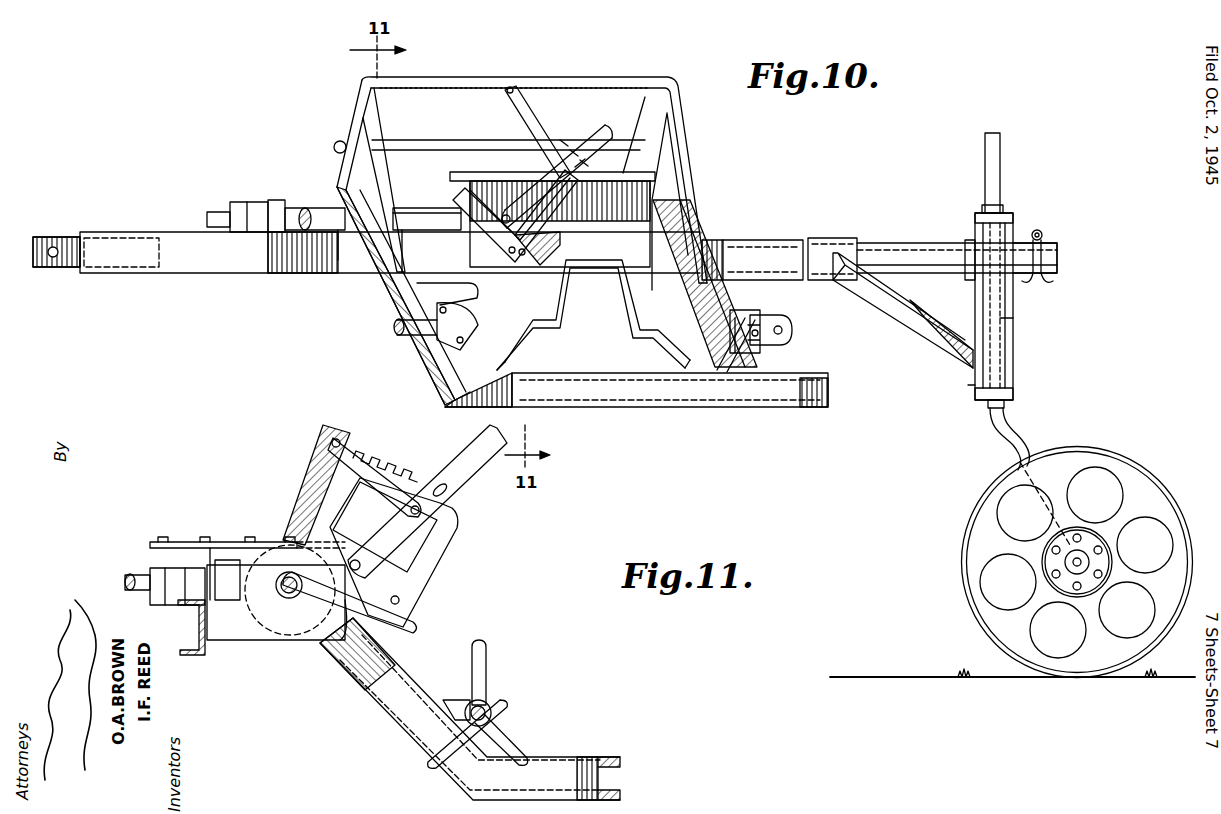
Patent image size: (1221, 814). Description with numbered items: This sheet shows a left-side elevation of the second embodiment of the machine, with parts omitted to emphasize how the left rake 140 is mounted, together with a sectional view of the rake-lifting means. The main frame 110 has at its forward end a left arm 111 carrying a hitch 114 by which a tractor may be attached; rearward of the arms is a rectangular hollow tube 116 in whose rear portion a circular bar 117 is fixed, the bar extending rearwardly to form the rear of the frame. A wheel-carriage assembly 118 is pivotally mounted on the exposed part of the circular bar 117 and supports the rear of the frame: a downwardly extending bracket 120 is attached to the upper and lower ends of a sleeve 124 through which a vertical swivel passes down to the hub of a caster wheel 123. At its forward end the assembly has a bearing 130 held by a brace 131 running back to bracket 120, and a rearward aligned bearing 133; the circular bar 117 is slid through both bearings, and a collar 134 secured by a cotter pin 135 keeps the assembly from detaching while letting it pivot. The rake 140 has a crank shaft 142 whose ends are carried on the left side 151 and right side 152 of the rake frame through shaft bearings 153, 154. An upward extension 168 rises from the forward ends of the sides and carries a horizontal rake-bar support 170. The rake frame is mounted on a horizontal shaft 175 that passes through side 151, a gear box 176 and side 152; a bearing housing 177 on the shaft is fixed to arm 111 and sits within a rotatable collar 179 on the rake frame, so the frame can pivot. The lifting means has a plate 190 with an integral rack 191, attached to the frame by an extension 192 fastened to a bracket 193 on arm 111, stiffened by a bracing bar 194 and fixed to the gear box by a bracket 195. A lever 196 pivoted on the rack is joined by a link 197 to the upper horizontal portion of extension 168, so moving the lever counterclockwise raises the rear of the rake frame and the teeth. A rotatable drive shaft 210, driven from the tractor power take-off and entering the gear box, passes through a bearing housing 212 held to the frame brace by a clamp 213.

In FIG. 10, the main frame 110 is at (779, 240).
In FIG. 10, the left arm 111 is at (163, 232).
In FIG. 11, the left arm 111 is at (196, 655).
In FIG. 10, the hitch 114 is at (53, 237).
In FIG. 10, the rectangular hollow tube 116 is at (722, 240).
In FIG. 10, the circular bar 117 is at (917, 243).
In FIG. 10, the wheel-carriage assembly 118 is at (1016, 336).
In FIG. 10, the bracket 120 is at (975, 364).
In FIG. 10, the caster wheel 123 is at (1082, 449).
In FIG. 10, the sleeve 124 is at (1013, 322).
In FIG. 10, the bearing 130 is at (838, 238).
In FIG. 10, the brace 131 is at (918, 319).
In FIG. 10, the bearing 133 is at (966, 235).
In FIG. 10, the collar 134 is at (1046, 276).
In FIG. 10, the cotter pin 135 is at (1038, 229).
In FIG. 10, the left rake 140 is at (748, 408).
In FIG. 11, the left rake 140 is at (593, 757).
In FIG. 10, the crank shaft 142 is at (552, 328).
In FIG. 11, the crank shaft 142 is at (487, 697).
In FIG. 10, the left side 151 is at (413, 357).
In FIG. 10, the right side 152 is at (718, 298).
In FIG. 10, the shaft bearing 153 is at (468, 318).
In FIG. 10, the shaft bearing 154 is at (757, 316).
In FIG. 11, the shaft bearing 154 is at (492, 713).
In FIG. 10, the upward extension 168 is at (352, 120).
In FIG. 11, the upward extension 168 is at (318, 479).
In FIG. 10, the horizontal rake-bar support 170 is at (410, 140).
In FIG. 10, the horizontal shaft 175 is at (312, 208).
In FIG. 11, the horizontal shaft 175 is at (292, 600).
In FIG. 10, the gear box 176 is at (552, 219).
In FIG. 11, the gear box 176 is at (290, 640).
In FIG. 10, the bearing housing 177 is at (303, 252).
In FIG. 10, the rotatable collar 179 is at (352, 264).
In FIG. 11, the plate 190 is at (405, 621).
In FIG. 10, the rack 191 is at (478, 160).
In FIG. 11, the rack 191 is at (440, 567).
In FIG. 11, the extension 192 is at (240, 562).
In FIG. 11, the bracket 193 is at (208, 565).
In FIG. 11, the bracing bar 194 is at (255, 632).
In FIG. 10, the bracket 195 is at (545, 262).
In FIG. 10, the lever 196 is at (590, 136).
In FIG. 11, the lever 196 is at (487, 465).
In FIG. 10, the link 197 is at (518, 95).
In FIG. 11, the link 197 is at (368, 459).
In FIG. 11, the rotatable drive shaft 210 is at (142, 572).
In FIG. 10, the bearing housing 212 is at (255, 202).
In FIG. 10, the clamp 213 is at (278, 200).